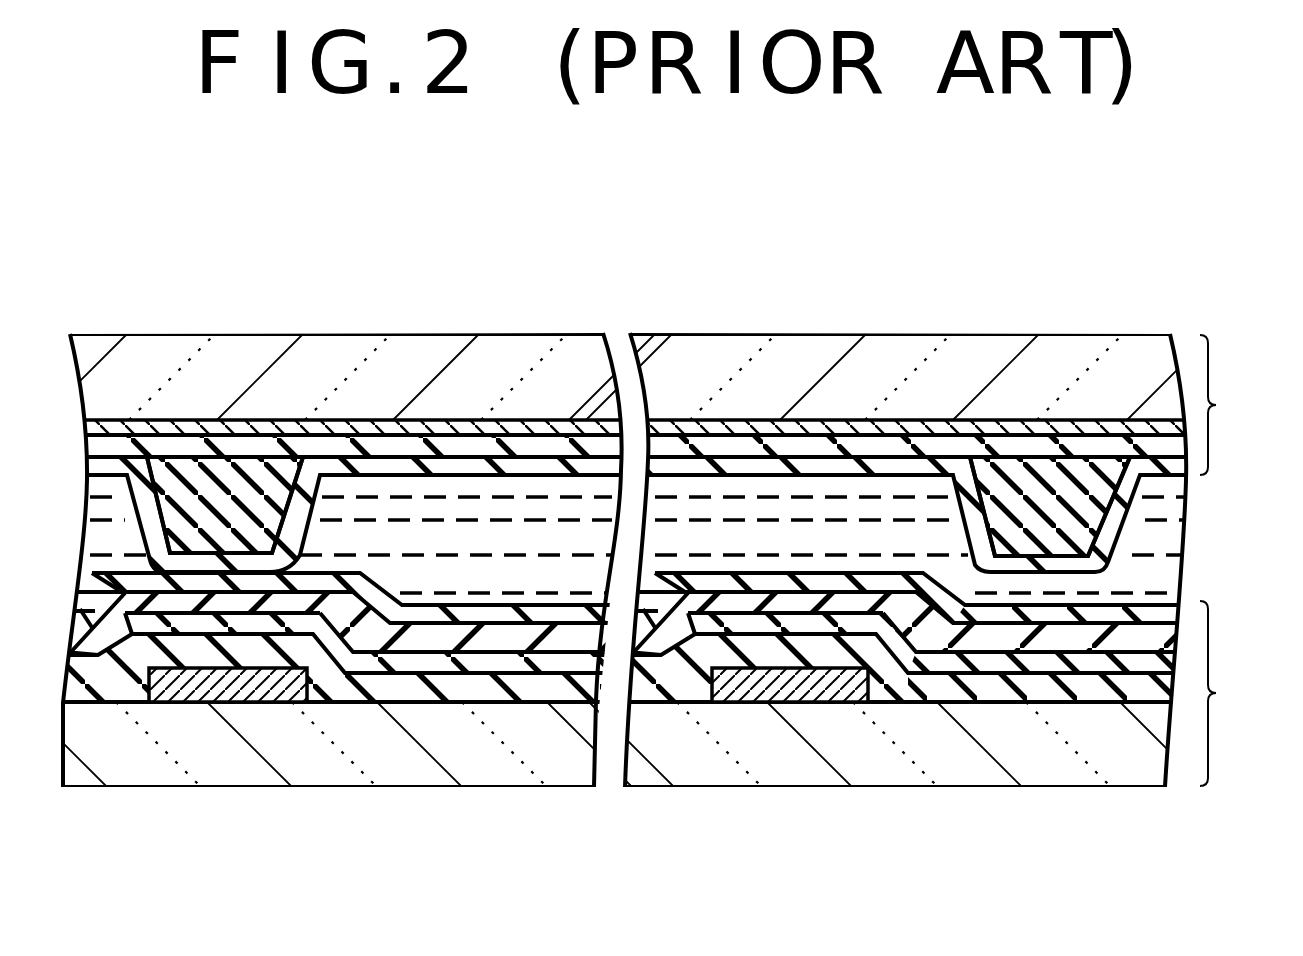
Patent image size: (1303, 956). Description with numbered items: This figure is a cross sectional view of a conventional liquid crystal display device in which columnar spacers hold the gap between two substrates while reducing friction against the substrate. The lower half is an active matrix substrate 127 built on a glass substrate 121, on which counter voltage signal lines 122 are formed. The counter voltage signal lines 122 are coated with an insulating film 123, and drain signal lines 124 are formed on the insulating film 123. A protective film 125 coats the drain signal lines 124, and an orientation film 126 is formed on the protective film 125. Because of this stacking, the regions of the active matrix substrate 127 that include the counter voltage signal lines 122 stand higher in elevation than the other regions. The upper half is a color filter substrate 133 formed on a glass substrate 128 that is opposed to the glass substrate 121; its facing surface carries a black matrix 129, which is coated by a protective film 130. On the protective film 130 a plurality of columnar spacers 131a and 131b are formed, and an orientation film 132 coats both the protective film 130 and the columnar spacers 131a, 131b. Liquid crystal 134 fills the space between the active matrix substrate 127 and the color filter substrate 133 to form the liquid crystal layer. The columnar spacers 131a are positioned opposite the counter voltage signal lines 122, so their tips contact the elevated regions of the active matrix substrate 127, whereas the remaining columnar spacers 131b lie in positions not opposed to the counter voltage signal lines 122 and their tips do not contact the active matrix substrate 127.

The glass substrate 121 is at (723, 737).
The counter voltage signal lines 122 is at (800, 683).
The insulating film 123 is at (930, 690).
The drain signal lines 124 is at (675, 650).
The protective film 125 is at (1048, 640).
The orientation film 126 is at (905, 605).
The active matrix substrate 127 is at (683, 623).
The glass substrate 128 is at (973, 367).
The black matrix 129 is at (873, 430).
The protective film 130 is at (757, 453).
The columnar spacers 131a is at (216, 507).
The columnar spacers 131b is at (1080, 490).
The orientation film 132 is at (678, 467).
The color filter substrate 133 is at (686, 406).
The liquid crystal 134 is at (1130, 595).